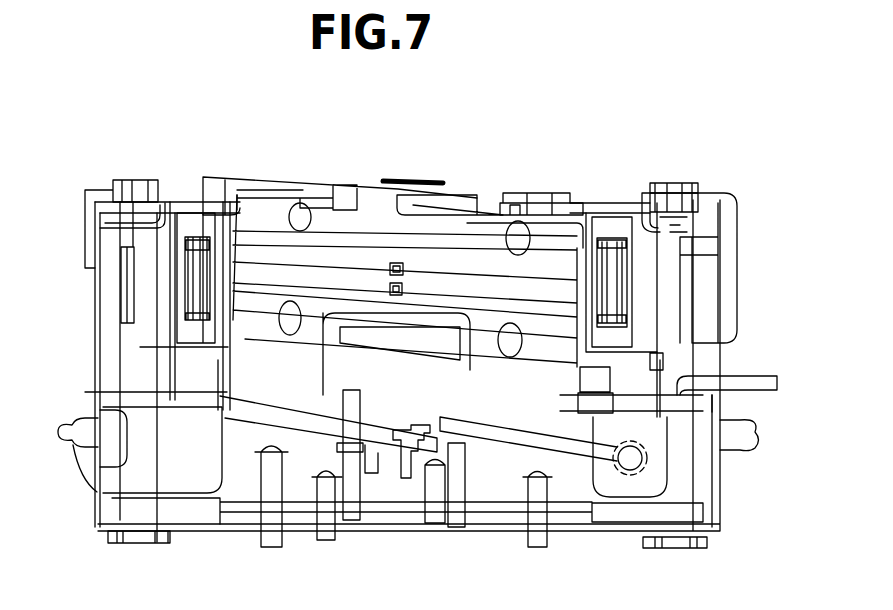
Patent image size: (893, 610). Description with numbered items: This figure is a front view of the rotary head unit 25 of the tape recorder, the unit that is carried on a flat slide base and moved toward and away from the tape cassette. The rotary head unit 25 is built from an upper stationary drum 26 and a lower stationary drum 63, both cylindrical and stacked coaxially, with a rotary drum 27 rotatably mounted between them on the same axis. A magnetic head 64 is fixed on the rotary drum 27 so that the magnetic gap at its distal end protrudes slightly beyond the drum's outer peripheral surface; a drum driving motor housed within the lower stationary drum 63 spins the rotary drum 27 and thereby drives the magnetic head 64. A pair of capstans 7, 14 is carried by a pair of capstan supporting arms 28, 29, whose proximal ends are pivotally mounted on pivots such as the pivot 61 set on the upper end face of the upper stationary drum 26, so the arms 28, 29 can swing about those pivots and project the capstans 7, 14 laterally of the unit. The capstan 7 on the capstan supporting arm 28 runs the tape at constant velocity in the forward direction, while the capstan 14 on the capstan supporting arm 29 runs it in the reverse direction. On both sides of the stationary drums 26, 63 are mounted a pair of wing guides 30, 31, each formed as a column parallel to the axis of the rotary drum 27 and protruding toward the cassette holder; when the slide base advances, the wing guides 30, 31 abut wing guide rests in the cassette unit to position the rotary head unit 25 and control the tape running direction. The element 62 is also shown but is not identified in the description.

The capstan 7 is at (143, 275).
The capstan 14 is at (663, 267).
The rotary head unit 25 is at (490, 191).
The upper stationary drum 26 is at (333, 207).
The rotary drum 27 is at (360, 284).
The capstan supporting arm 28 is at (180, 197).
The capstan supporting arm 29 is at (614, 208).
The wing guide 30 is at (618, 287).
The wing guide 31 is at (193, 293).
The pivot 61 is at (268, 200).
The retainer block 62 is at (543, 200).
The lower stationary drum 63 is at (520, 420).
The magnetic head 64 is at (407, 281).